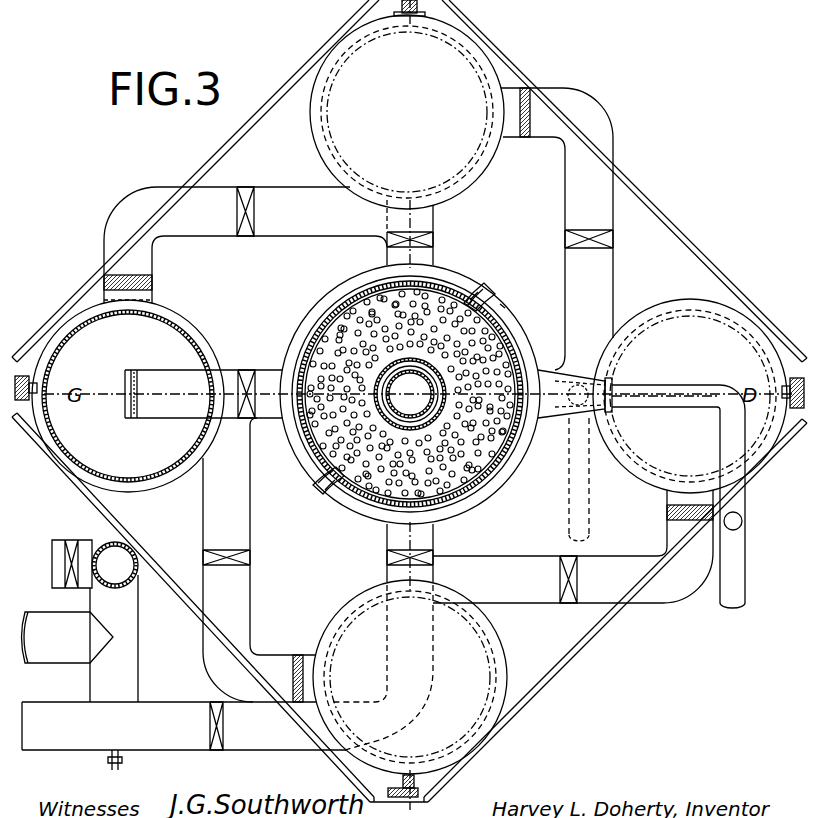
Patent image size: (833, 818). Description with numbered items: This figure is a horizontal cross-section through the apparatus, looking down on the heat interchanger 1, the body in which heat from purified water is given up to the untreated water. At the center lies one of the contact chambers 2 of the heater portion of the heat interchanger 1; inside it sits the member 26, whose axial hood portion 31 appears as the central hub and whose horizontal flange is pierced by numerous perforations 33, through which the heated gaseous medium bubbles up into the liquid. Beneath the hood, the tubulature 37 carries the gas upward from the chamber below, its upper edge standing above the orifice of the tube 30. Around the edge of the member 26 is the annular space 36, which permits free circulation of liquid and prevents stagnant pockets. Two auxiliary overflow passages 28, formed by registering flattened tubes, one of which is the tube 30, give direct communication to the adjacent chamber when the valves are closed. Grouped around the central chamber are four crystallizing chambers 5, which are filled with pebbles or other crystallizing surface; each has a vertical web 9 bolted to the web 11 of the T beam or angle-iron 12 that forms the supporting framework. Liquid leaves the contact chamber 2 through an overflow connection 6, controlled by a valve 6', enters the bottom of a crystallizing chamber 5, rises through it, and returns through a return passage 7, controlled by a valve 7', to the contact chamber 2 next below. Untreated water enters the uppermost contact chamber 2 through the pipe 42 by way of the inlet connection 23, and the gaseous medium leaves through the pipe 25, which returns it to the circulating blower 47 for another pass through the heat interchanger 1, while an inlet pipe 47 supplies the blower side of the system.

The heat interchanger 1 is at (486, 505).
The contact chamber 2 is at (467, 290).
The crystallizing chamber 5 is at (409, 394).
The overflow connection 6 is at (368, 475).
The valve 6' is at (419, 401).
The return passage 7 is at (408, 395).
The valve 7' is at (408, 395).
The vertical web 9 is at (24, 402).
The web 11 is at (35, 388).
The T beam or angle-iron 12 is at (218, 585).
The inlet connection 23 is at (548, 412).
The pipe 25 is at (95, 564).
The member 26 is at (510, 347).
The auxiliary overflow passage 28 is at (483, 318).
The tube 30 is at (343, 487).
The axial hood portion 31 is at (440, 378).
The perforations 33 is at (368, 302).
The annular space 36 is at (507, 453).
The tubulature 37 is at (410, 394).
The pipe 42 is at (668, 400).
The circulating blower 47 is at (184, 672).